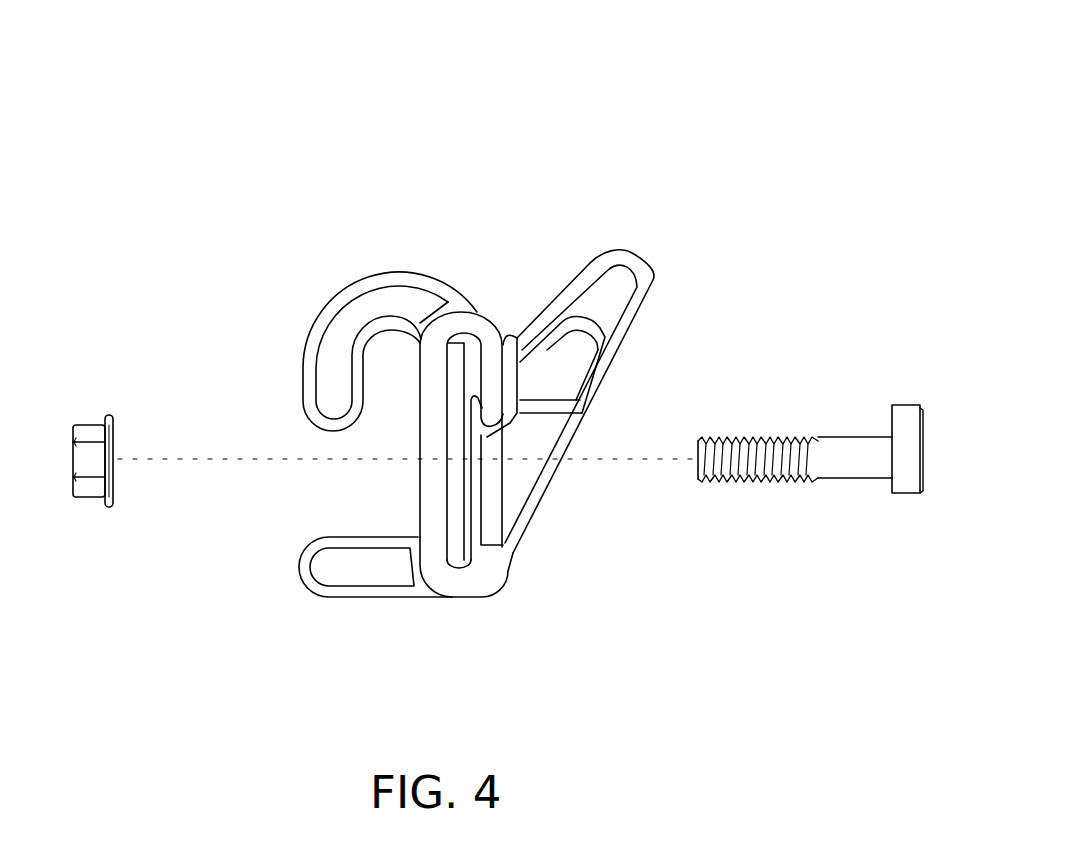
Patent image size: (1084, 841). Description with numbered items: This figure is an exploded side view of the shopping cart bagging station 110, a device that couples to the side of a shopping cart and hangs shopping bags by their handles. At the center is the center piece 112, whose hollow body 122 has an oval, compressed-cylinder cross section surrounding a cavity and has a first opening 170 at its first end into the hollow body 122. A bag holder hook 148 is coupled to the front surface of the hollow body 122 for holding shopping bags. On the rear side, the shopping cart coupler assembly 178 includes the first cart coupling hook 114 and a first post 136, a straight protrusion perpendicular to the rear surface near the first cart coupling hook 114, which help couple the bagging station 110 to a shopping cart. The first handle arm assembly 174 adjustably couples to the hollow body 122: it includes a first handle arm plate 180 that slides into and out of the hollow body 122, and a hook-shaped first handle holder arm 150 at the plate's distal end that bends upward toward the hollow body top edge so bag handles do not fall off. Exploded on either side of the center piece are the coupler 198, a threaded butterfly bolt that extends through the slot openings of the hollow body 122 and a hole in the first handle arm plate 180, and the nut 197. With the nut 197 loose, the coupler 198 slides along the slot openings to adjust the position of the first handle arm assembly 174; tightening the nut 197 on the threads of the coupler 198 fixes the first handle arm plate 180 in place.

The shopping cart bagging station 110 is at (384, 78).
The center piece 112 is at (452, 192).
The first cart coupling hook 114 is at (350, 288).
The hollow body 122 is at (482, 322).
The first post 136 is at (347, 580).
The bag holder hook 148 is at (630, 273).
The first handle holder arm 150 is at (530, 510).
The first opening 170 is at (463, 575).
The first handle arm assembly 174 is at (513, 589).
The shopping cart coupler assembly 178 is at (266, 318).
The first handle arm plate 180 is at (452, 497).
The nut 197 is at (87, 432).
The coupler 198 is at (913, 420).